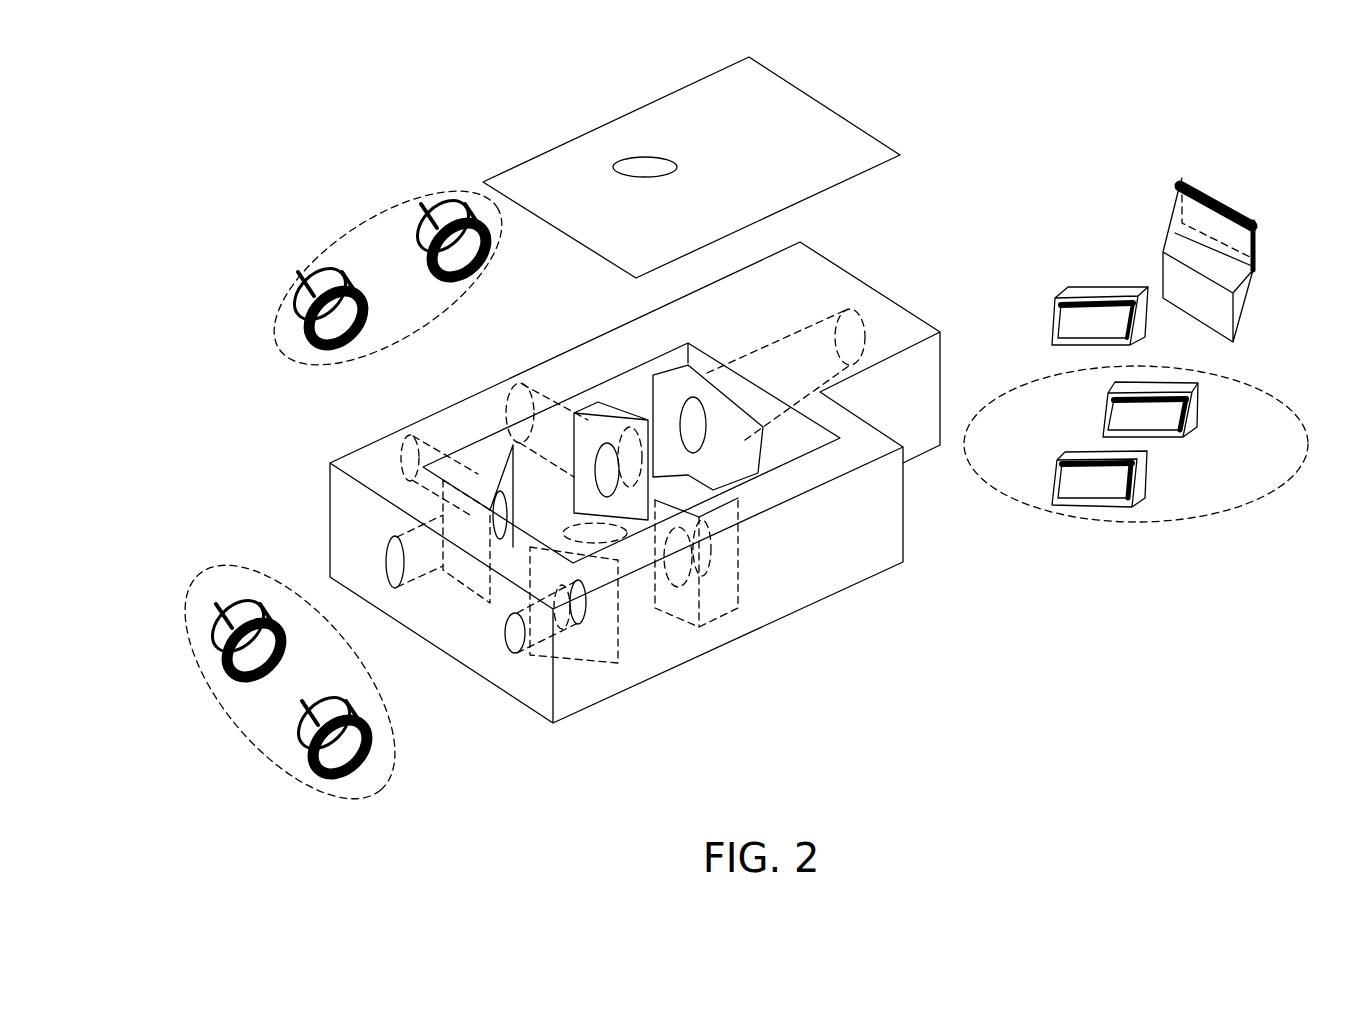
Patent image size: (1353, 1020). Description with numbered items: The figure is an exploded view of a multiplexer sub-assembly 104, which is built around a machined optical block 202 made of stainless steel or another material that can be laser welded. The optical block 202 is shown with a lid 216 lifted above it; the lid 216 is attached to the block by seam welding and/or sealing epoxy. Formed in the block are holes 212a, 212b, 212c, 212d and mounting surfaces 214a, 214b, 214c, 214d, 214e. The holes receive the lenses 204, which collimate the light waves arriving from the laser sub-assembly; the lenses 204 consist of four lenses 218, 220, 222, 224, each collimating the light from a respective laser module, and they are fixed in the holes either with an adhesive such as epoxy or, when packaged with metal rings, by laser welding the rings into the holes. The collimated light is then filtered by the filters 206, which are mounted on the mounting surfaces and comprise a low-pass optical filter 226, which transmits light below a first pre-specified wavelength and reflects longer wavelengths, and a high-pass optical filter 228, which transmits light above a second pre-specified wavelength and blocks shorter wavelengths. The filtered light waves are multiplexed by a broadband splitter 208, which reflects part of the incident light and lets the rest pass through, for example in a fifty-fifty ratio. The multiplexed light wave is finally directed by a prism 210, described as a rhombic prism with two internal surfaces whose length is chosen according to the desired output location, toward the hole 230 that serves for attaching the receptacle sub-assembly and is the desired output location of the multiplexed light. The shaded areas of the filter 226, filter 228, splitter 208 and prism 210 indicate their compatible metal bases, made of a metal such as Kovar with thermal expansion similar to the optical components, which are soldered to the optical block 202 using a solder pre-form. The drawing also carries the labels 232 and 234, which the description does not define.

The multiplexer sub-assembly 104 is at (1250, 779).
The optical block 202 is at (818, 262).
The lenses 204 is at (208, 563).
The filters 206 is at (1120, 527).
The broadband splitter 208 is at (1105, 287).
The prism 210 is at (1210, 225).
The hole 212a is at (508, 645).
The hole 212b is at (393, 565).
The hole 212c is at (408, 463).
The hole 212d is at (517, 410).
The mounting surface 214a is at (782, 453).
The mounting surface 214b is at (715, 590).
The mounting surface 214c is at (600, 643).
The mounting surface 214d is at (475, 483).
The mounting surface 214e is at (596, 398).
The lid 216 is at (535, 159).
The lens 218 is at (318, 745).
The lens 220 is at (233, 667).
The lens 222 is at (320, 300).
The lens 224 is at (433, 245).
The low-pass optical filter 226 is at (1073, 500).
The high-pass optical filter 228 is at (1163, 425).
The hole 230 is at (695, 417).
The opening 232 is at (643, 165).
The aperture 234 is at (597, 533).